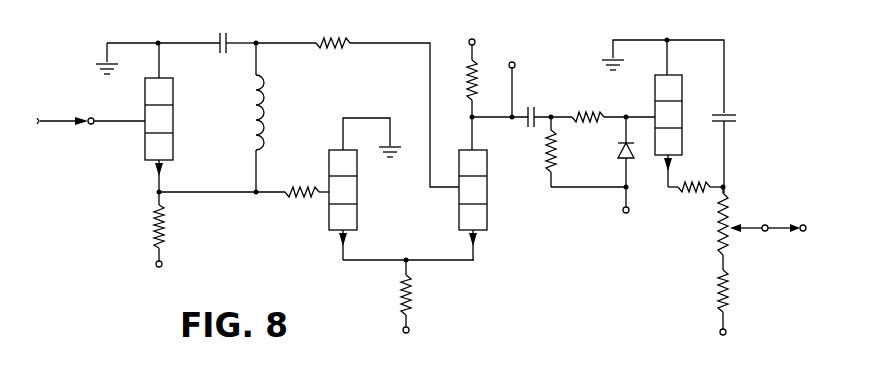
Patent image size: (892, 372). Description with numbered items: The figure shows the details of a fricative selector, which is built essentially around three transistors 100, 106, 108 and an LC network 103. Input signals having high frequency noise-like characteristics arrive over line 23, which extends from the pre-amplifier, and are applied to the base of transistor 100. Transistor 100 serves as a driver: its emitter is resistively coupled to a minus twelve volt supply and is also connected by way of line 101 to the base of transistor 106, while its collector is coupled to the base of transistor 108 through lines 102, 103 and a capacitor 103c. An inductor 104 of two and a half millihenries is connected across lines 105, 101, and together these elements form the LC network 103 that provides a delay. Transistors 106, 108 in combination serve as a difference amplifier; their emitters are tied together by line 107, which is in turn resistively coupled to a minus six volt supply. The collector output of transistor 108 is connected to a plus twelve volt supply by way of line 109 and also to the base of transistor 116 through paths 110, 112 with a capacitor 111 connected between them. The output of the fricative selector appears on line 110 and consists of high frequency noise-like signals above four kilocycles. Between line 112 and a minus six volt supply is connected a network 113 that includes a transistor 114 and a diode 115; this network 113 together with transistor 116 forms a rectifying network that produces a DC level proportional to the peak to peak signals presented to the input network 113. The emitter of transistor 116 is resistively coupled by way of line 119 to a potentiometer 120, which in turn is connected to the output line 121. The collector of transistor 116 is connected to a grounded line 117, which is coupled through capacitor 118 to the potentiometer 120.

The line 23 is at (60, 121).
The transistor 100 is at (173, 125).
The line 101 is at (172, 192).
The line 102 is at (160, 62).
The LC network 103 is at (222, 135).
The capacitor 103c is at (224, 32).
The inductor 104 is at (256, 100).
The line 105 is at (430, 165).
The transistor 106 is at (357, 210).
The line 107 is at (381, 261).
The transistor 108 is at (459, 208).
The line 109 is at (470, 105).
The path 110 is at (499, 116).
The capacitor 111 is at (541, 106).
The path 112 is at (540, 114).
The network 113 is at (607, 145).
The transistor 114 is at (545, 160).
The diode 115 is at (620, 158).
The transistor 116 is at (682, 95).
The grounded line 117 is at (716, 41).
The capacitor 118 is at (735, 113).
The line 119 is at (695, 196).
The potentiometer 120 is at (764, 223).
The output line 121 is at (777, 232).